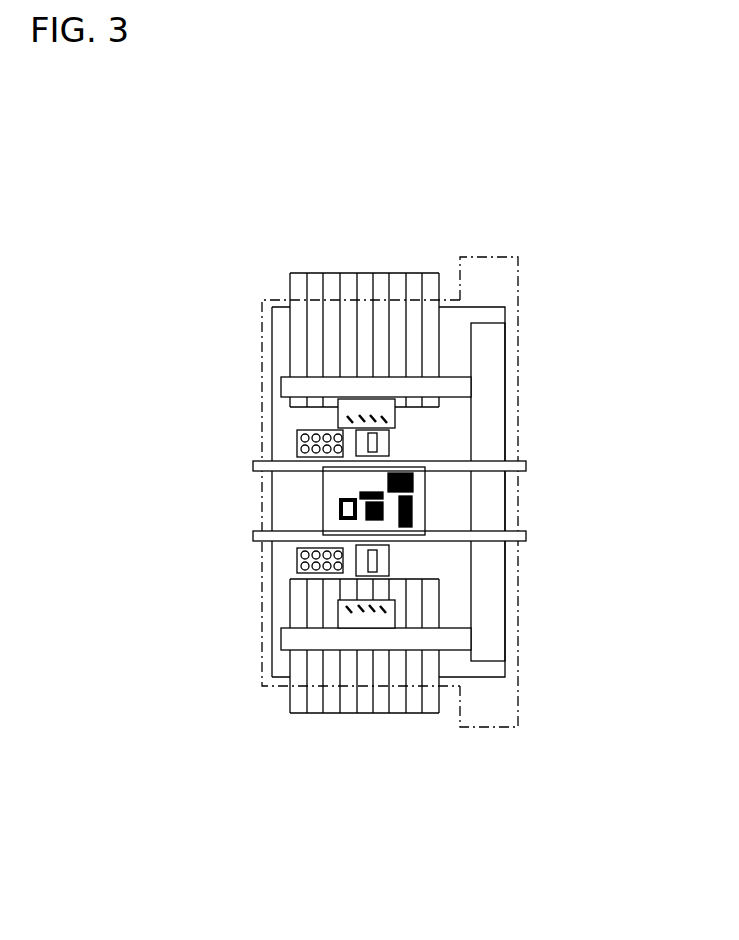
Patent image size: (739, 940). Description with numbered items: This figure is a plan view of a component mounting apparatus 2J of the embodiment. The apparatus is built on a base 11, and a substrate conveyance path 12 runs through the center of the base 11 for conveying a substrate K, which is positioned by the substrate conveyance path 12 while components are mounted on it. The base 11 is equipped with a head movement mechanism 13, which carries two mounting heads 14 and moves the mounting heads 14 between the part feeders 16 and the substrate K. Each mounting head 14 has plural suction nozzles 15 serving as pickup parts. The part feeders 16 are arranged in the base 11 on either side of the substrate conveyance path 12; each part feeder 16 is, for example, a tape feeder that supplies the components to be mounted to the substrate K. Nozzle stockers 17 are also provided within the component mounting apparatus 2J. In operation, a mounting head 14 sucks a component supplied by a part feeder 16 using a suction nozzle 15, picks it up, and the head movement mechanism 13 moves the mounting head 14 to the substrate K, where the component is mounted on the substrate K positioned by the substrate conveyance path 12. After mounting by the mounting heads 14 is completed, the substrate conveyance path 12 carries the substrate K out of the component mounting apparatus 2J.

The component mounting apparatus 2J is at (472, 243).
The base 11 is at (282, 327).
The substrate conveyance path 12 is at (526, 472).
The head movement mechanism 13 is at (505, 345).
The mounting head 14 is at (340, 414).
The suction nozzle 15 is at (395, 422).
The part feeder 16 is at (378, 280).
The nozzle stocker 17 is at (297, 443).
The substrate K is at (330, 490).